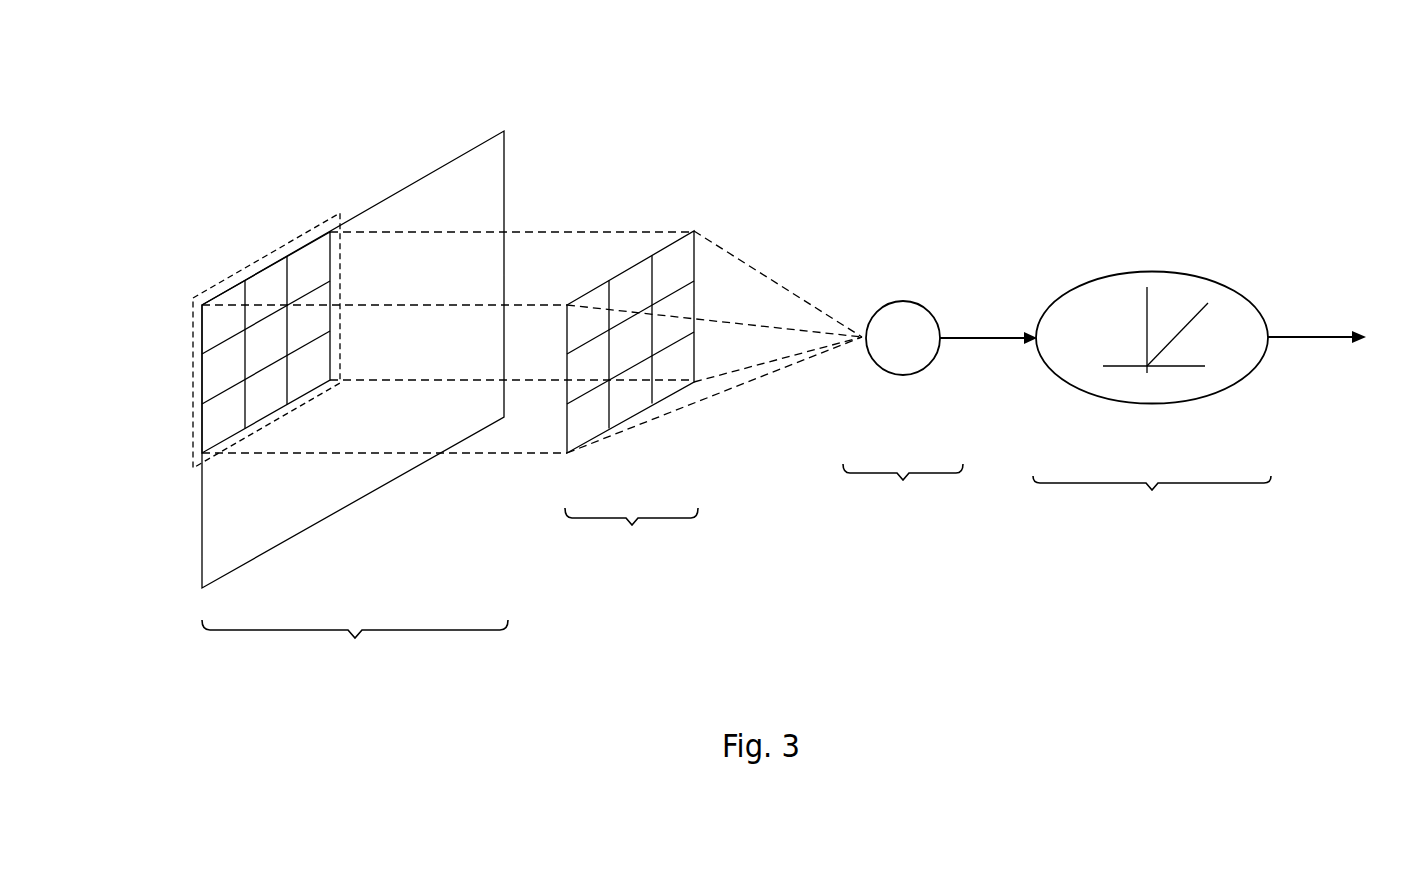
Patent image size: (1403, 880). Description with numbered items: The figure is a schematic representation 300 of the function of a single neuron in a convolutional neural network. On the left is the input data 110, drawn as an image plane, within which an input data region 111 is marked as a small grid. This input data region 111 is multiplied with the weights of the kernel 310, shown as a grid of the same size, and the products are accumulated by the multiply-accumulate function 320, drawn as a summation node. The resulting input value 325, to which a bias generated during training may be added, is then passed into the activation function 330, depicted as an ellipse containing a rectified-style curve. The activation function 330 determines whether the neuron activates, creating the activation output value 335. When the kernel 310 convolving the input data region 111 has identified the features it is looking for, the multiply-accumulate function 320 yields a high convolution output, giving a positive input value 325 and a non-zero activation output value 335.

The schematic representation 300 is at (198, 112).
The input data 110 is at (355, 405).
The input data region 111 is at (222, 292).
The kernel 310 is at (631, 401).
The multiply-accumulate function 320 is at (903, 416).
The input value 325 is at (950, 334).
The activation function 330 is at (1152, 406).
The activation output value 335 is at (1306, 334).